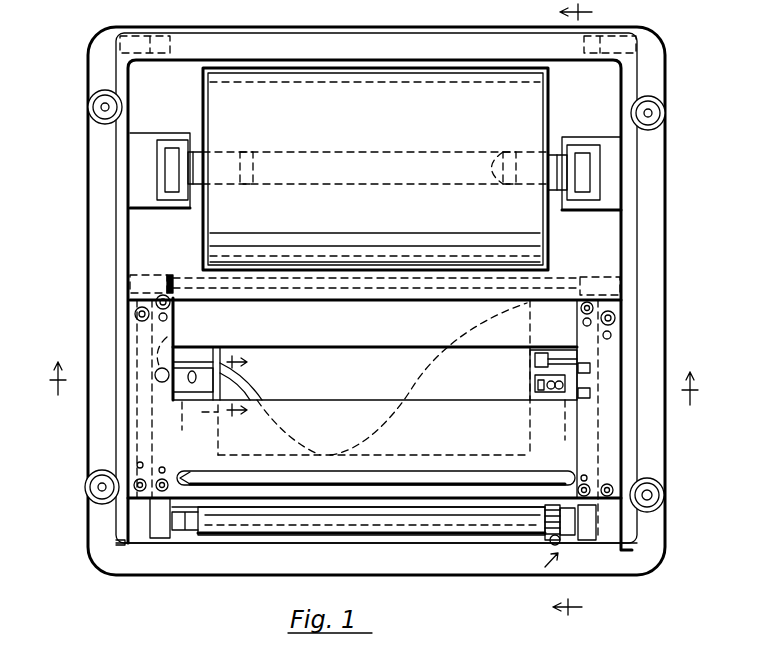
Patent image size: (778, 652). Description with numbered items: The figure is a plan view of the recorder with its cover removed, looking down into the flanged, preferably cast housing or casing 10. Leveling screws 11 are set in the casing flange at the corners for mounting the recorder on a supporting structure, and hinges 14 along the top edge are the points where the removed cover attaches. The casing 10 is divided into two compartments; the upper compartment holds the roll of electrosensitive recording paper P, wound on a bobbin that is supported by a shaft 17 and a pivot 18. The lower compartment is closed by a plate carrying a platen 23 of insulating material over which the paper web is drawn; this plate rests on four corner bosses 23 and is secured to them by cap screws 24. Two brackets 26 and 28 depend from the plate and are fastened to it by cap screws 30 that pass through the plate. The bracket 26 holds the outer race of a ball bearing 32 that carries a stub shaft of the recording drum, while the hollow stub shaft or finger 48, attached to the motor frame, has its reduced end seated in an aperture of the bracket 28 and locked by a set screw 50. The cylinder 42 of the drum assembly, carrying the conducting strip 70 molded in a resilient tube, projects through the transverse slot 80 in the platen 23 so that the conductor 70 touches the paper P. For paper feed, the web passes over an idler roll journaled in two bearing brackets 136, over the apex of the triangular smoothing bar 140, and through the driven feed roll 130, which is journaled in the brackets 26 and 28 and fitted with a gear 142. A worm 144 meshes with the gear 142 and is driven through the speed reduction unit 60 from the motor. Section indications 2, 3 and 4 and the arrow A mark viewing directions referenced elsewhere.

The housing or casing 10 is at (228, 572).
The leveling screws 11 is at (93, 107).
The hinges 14 is at (143, 38).
The electrosensitive recording paper P is at (362, 136).
The shaft 17 is at (498, 160).
The pivot 18 is at (198, 154).
The bearing brackets 136 is at (151, 277).
The platen 23 is at (133, 300).
The cap screws 24 is at (135, 313).
The cap screws 30 is at (170, 303).
The ball bearing 32 is at (600, 365).
The hollow stub shaft or finger 48 is at (172, 350).
The set screw 50 is at (155, 376).
The conducting strip or ribbon 70 is at (240, 392).
The transverse slot 80 is at (320, 347).
The section line 4- 4 is at (236, 387).
The cylinder 42 is at (484, 446).
The smoothing bar 140 is at (245, 472).
The feed roll 130 is at (462, 530).
The gear 142 is at (550, 535).
The speed reduction unit 60 is at (556, 544).
The worm 144 is at (568, 538).
The bracket 26 is at (588, 540).
The bracket 28 is at (163, 540).
The direction arrow A is at (558, 557).
The section line 2- 2 is at (374, 395).
The section line 3- 3 is at (585, 310).